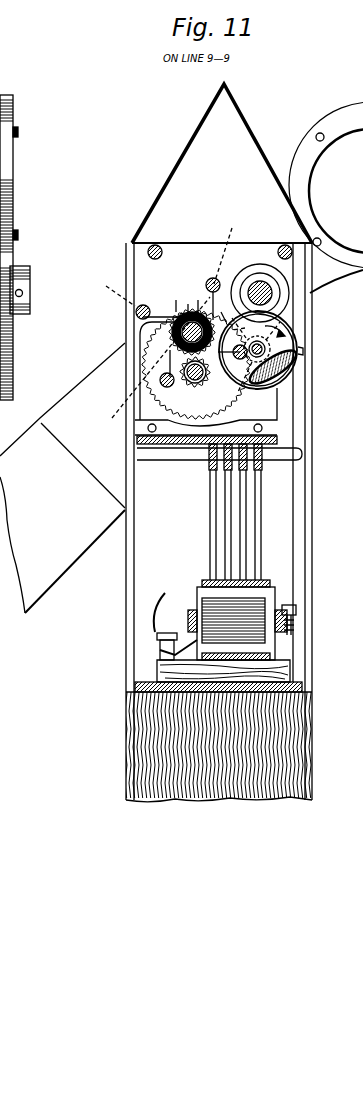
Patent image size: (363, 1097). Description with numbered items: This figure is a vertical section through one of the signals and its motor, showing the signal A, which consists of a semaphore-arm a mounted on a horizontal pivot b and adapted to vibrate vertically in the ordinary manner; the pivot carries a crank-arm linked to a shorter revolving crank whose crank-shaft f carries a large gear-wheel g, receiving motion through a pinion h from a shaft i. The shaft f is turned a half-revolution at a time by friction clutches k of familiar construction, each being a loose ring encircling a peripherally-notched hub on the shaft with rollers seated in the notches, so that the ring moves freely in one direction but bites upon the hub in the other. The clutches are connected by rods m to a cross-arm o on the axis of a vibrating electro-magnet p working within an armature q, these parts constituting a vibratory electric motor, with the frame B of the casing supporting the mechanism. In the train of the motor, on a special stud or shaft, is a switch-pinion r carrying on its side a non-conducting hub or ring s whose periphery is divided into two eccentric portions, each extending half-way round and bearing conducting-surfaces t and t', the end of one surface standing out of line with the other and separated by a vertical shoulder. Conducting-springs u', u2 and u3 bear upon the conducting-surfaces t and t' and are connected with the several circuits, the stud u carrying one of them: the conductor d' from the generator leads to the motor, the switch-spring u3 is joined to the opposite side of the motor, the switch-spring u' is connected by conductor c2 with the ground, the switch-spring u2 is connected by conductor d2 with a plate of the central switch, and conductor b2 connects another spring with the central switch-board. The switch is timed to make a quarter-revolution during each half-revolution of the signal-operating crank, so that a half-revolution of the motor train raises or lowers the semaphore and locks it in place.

The signal A is at (134, 223).
The frame plate B is at (195, 555).
The semaphore-arm a is at (62, 354).
The horizontal pivot b is at (260, 293).
The conductor b2 is at (152, 360).
The conductor c2 is at (113, 290).
The conductor d' is at (200, 381).
The conductor d2 is at (231, 251).
The crank-shaft f is at (190, 392).
The large gear-wheel g is at (246, 408).
The pinion h is at (256, 342).
The shaft i is at (262, 348).
The friction clutch k is at (264, 386).
The rod m is at (250, 512).
The cross-arm o is at (289, 630).
The vibrating electro-magnet p is at (237, 623).
The armature q is at (203, 583).
The switch-pinion r is at (183, 304).
The non-conducting hub or ring s is at (196, 301).
The conducting-surface t is at (221, 310).
The conducting-surface t' is at (170, 298).
The stud u is at (163, 367).
The conducting-spring u' is at (161, 307).
The conducting-spring u2 is at (221, 286).
The conducting-spring u3 is at (232, 346).